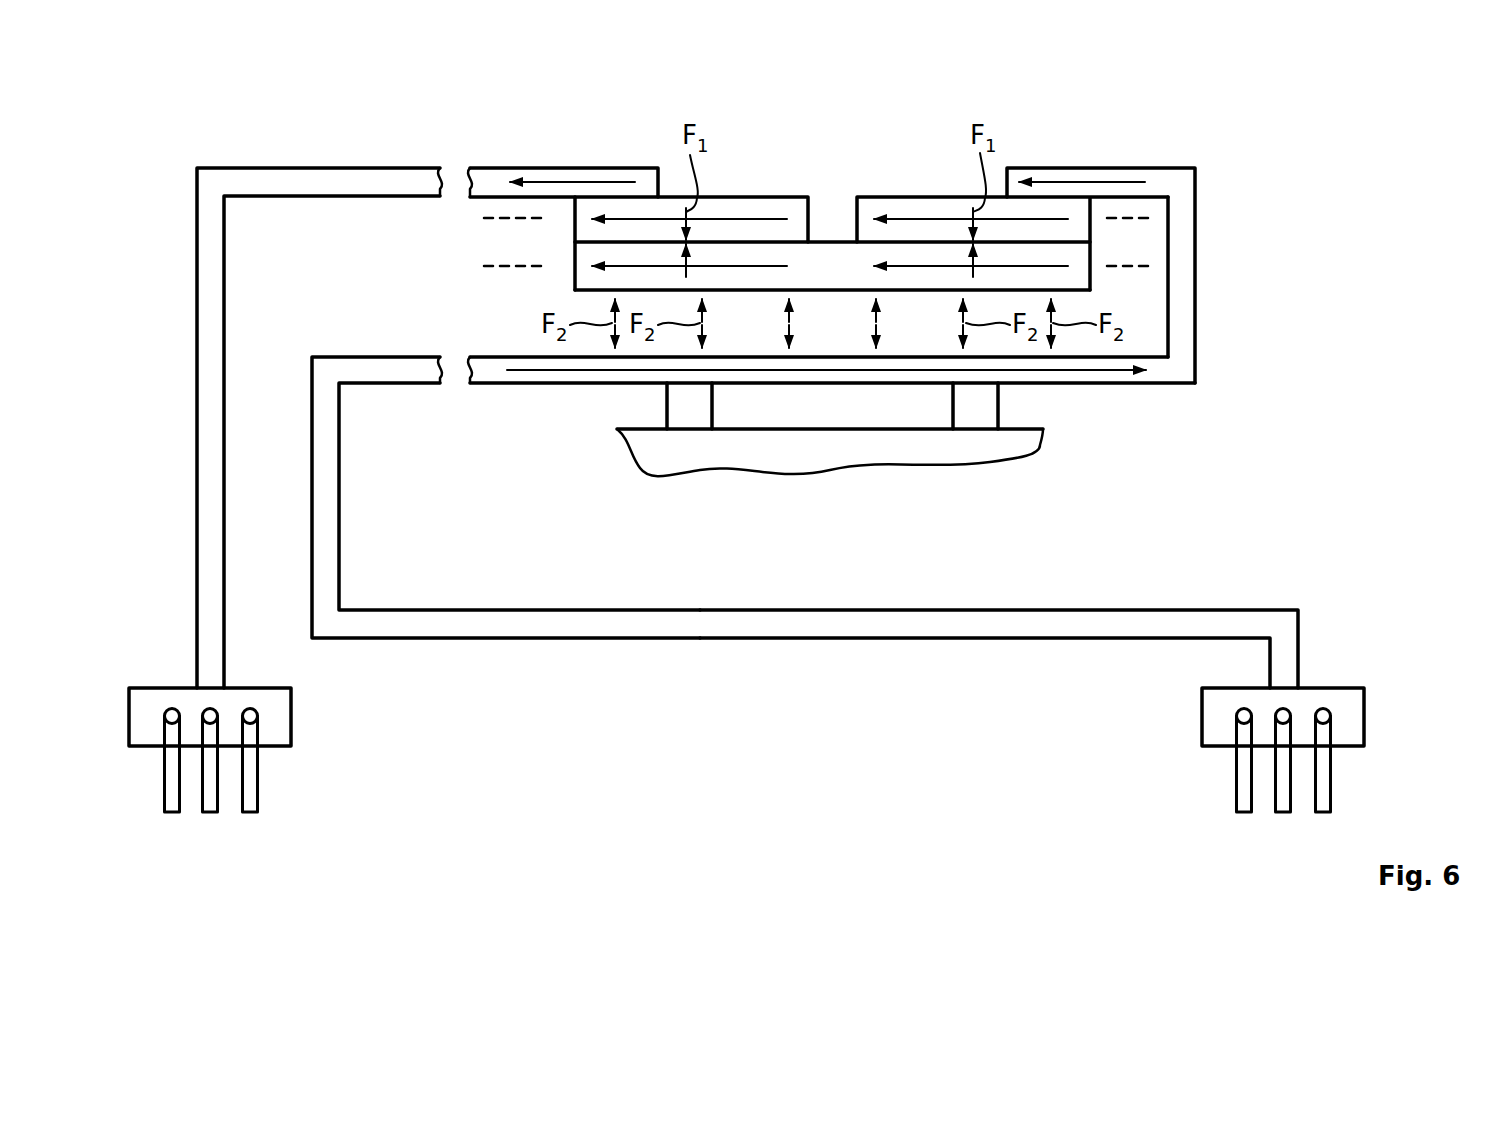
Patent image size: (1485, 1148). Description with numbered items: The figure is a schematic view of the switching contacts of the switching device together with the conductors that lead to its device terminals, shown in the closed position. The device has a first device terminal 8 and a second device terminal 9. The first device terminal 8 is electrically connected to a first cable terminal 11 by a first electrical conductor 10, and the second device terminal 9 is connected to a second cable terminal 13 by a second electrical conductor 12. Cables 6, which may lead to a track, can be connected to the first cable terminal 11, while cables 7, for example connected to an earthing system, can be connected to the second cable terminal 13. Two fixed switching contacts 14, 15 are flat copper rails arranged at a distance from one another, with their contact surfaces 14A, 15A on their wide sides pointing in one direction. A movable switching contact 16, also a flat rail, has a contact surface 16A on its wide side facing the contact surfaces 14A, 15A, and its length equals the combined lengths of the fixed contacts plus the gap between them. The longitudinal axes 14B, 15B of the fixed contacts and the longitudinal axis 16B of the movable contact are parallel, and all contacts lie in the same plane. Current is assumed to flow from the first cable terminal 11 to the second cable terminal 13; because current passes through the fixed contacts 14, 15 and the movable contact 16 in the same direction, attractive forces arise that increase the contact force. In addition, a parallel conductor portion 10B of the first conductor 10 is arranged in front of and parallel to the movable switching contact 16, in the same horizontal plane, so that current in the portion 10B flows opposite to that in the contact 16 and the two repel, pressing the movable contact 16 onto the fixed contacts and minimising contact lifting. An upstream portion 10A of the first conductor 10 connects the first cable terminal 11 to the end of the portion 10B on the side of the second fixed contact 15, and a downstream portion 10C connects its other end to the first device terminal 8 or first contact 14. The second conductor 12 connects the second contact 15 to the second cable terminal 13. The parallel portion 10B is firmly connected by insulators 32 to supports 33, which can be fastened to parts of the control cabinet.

The cables 6 is at (1244, 807).
The cables 7 is at (172, 807).
The first device terminal 8 is at (1055, 197).
The second device terminal 9 is at (614, 197).
The first electrical conductor 10 is at (988, 604).
The upstream conductor portion 10A is at (531, 609).
The parallel conductor portion 10B is at (534, 380).
The downstream conductor portion 10C is at (1182, 283).
The first cable terminal 11 is at (1354, 719).
The second electrical conductor 12 is at (188, 428).
The second cable terminal 13 is at (280, 718).
The first fixed switching contact 14 is at (895, 197).
The contact surface of first fixed switching contact 14A is at (920, 248).
The longitudinal axis of first fixed switching contact 14B is at (1123, 218).
The second fixed switching contact 15 is at (730, 197).
The contact surface of second fixed switching contact 15A is at (757, 247).
The longitudinal axis of second fixed switching contact 15B is at (503, 218).
The movable switching contact 16 is at (830, 240).
The contact surface of movable switching contact 16A is at (740, 243).
The longitudinal axis of movable switching contact 16B is at (503, 268).
The insulators 32 is at (680, 407).
The supports 33 is at (794, 458).